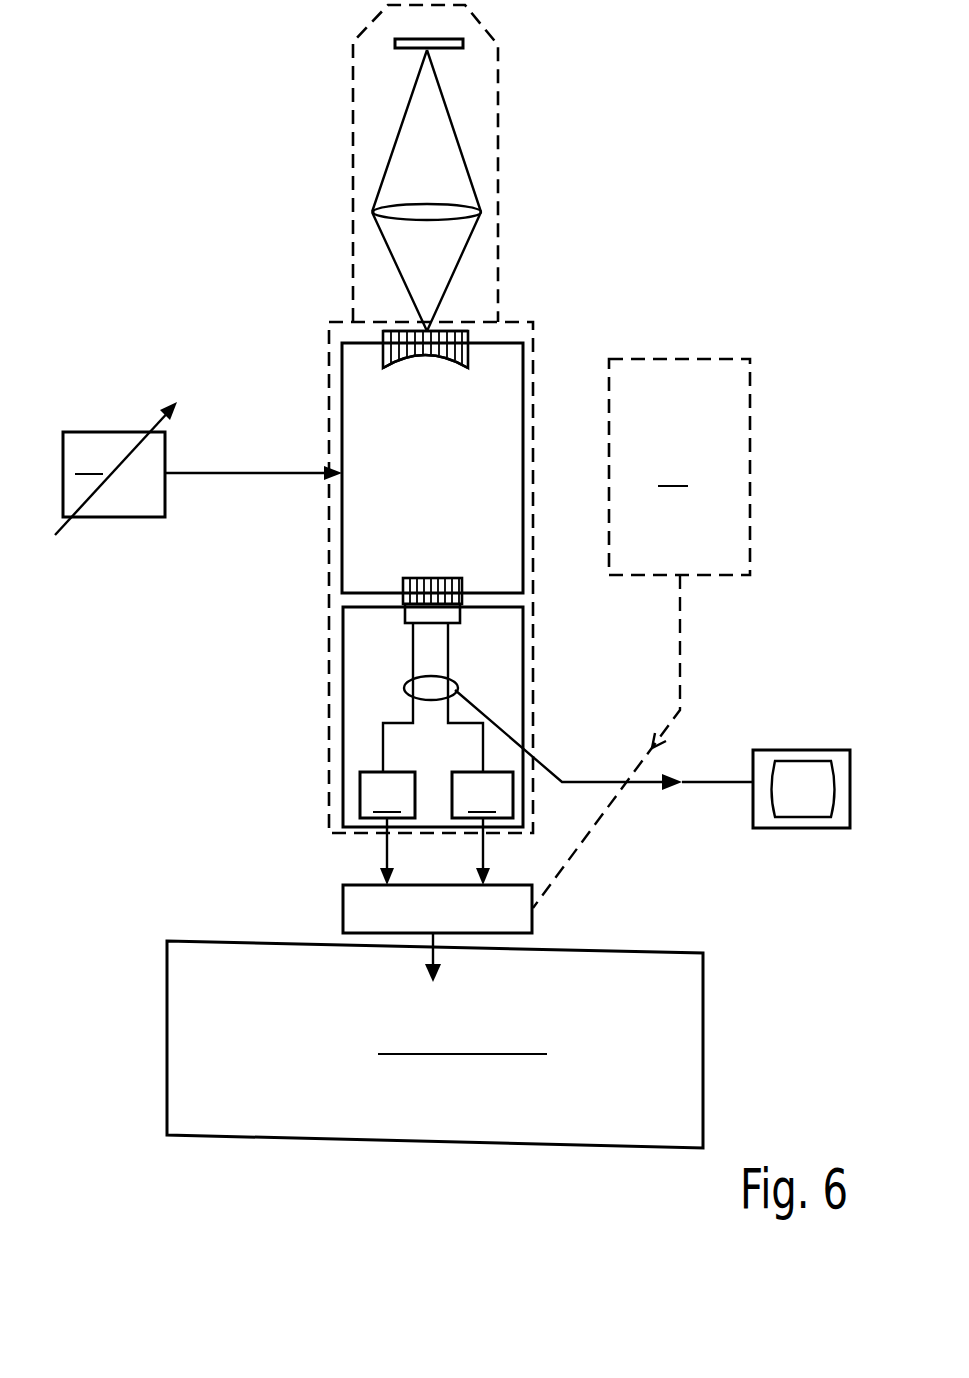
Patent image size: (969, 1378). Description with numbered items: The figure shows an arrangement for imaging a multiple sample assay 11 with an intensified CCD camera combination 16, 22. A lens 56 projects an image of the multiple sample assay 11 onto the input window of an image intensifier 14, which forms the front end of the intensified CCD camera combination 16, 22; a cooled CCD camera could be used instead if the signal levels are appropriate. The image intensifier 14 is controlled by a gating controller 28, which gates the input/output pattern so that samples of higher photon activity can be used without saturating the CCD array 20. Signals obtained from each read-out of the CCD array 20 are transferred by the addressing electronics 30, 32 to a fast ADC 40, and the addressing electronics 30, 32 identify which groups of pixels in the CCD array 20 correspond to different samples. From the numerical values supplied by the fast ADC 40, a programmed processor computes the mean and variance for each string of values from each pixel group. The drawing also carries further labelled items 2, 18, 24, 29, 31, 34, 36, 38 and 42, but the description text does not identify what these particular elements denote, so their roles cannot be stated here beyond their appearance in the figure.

The sample 2 is at (465, 330).
The multiple sample assay 11 is at (463, 43).
The image intensifier 14 is at (470, 343).
The intensified CCD camera combination 16 is at (533, 410).
The detector grating 18 is at (412, 578).
The CCD array 20 is at (405, 615).
The intensified CCD camera combination 22 is at (533, 696).
The grating surface 24 is at (385, 360).
The gating controller 28 is at (198, 468).
The housing 29 is at (327, 390).
The addressing electronics 30 is at (387, 795).
The control unit 31 is at (641, 633).
The addressing electronics 32 is at (482, 795).
The signal line 34 is at (382, 873).
The signal line 36 is at (490, 840).
The monitor 38 is at (785, 828).
The fast ADC 40 is at (533, 921).
The computer 42 is at (703, 1025).
The lens 56 is at (481, 210).